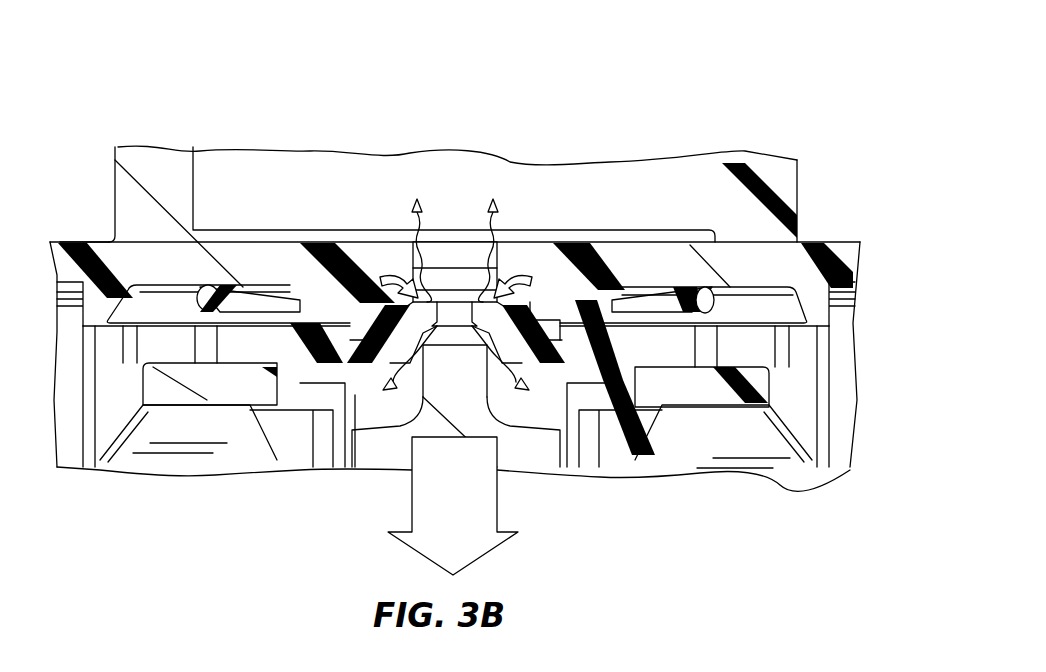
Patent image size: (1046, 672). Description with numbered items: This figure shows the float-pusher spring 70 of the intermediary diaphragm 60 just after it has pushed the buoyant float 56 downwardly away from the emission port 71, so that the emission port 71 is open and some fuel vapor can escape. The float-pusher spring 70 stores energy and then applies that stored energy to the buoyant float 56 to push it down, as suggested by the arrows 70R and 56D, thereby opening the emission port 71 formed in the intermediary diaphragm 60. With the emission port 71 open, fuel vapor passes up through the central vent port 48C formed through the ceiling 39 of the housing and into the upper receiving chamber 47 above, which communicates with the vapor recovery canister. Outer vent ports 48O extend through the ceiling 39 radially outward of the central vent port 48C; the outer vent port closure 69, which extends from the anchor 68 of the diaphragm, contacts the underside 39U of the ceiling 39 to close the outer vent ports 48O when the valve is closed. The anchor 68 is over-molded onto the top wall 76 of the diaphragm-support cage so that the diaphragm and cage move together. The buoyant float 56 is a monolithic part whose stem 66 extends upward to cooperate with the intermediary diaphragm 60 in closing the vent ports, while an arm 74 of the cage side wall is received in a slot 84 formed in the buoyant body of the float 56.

The float-pusher spring 70 is at (696, 28).
The upper receiving chamber 47 is at (326, 172).
The emission port 71 is at (457, 284).
The ceiling 39 is at (52, 230).
The underside of ceiling 39U is at (173, 292).
The outer vent port closure 69 is at (241, 275).
The outer vent ports 48O is at (255, 275).
The anchor 68 is at (350, 345).
The spring release arrows 70R is at (413, 295).
The central vent port 48C is at (424, 258).
The top wall of diaphragm-support cage 76 is at (542, 320).
The intermediary diaphragm 60 is at (672, 286).
The slot 84 is at (318, 442).
The arm 74 is at (242, 436).
The stem 66 is at (503, 381).
The float downward movement arrow 56D is at (410, 496).
The buoyant float 56 is at (677, 530).